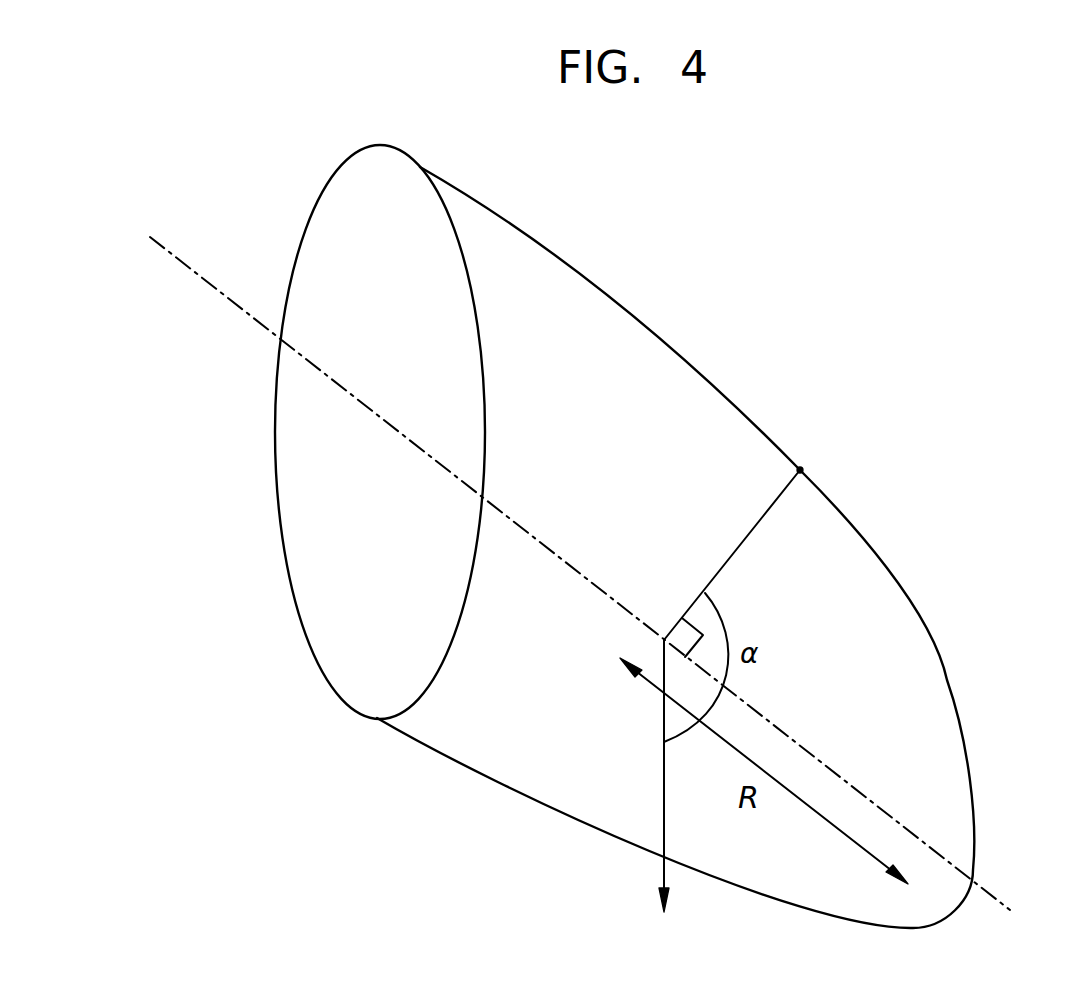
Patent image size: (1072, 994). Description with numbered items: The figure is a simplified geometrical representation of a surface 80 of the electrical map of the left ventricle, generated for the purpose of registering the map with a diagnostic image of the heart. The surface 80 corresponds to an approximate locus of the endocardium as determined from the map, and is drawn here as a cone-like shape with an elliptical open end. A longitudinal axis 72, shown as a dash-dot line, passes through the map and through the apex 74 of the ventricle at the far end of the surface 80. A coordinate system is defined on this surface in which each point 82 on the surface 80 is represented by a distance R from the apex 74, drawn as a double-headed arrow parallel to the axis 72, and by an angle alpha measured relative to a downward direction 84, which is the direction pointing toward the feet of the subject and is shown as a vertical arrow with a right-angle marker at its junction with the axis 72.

The longitudinal axis 72 is at (195, 270).
The apex 74 is at (972, 865).
The surface 80 is at (697, 370).
The point 82 is at (805, 468).
The downward direction 84 is at (663, 768).